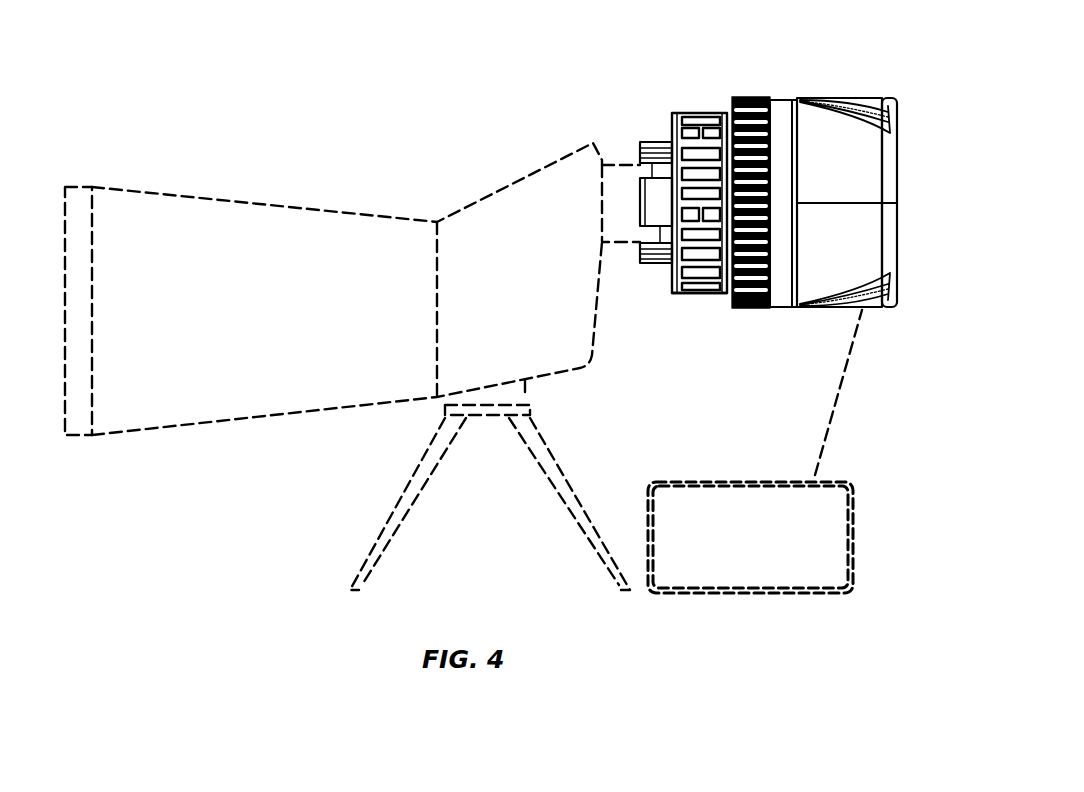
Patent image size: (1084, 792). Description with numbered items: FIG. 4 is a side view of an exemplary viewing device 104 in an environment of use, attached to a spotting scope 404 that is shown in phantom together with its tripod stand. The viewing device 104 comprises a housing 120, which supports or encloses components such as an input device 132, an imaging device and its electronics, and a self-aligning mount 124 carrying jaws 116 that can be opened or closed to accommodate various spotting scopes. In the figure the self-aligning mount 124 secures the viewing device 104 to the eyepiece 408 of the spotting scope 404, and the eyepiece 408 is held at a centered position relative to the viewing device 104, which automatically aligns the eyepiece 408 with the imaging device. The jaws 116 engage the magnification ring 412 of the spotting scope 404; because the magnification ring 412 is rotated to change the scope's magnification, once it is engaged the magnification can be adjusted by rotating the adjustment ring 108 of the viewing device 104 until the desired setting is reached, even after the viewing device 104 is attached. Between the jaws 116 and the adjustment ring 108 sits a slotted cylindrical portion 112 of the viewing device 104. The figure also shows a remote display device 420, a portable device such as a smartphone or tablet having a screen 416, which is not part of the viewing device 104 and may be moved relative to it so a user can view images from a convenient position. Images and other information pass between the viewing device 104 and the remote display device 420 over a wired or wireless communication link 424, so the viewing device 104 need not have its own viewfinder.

The viewing device 104 is at (797, 175).
The adjustment ring 108 is at (745, 310).
The slotted cylinder 112 is at (720, 113).
The jaws 116 is at (665, 177).
The housing 120 is at (815, 100).
The self-aligning mount 124 is at (678, 310).
The input device 132 is at (893, 196).
The spotting scope 404 is at (402, 168).
The eyepiece 408 is at (637, 167).
The magnification ring 412 is at (638, 237).
The screen 416 is at (750, 537).
The remote display device 420 is at (683, 482).
The communication link 424 is at (832, 415).